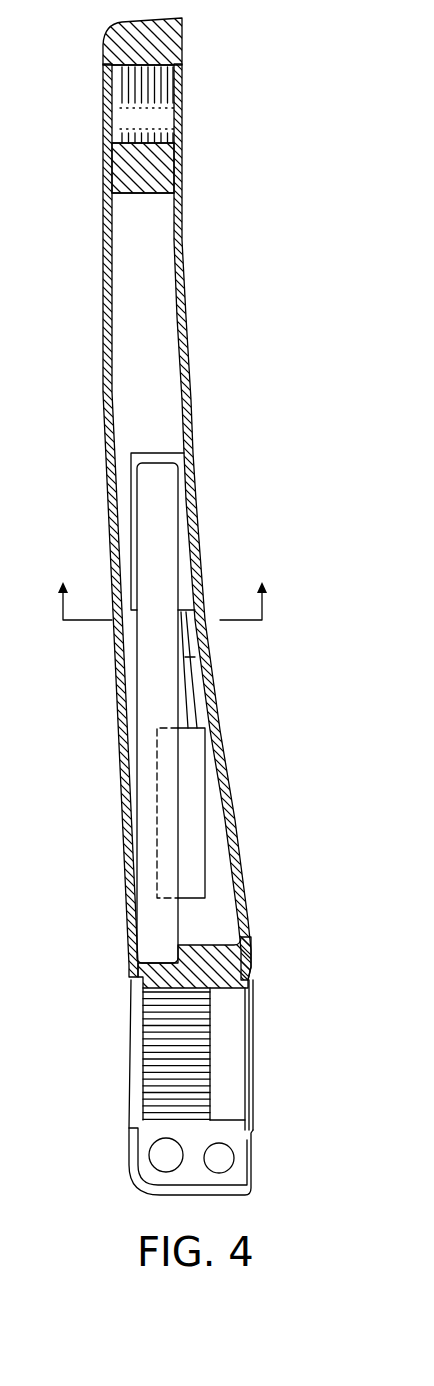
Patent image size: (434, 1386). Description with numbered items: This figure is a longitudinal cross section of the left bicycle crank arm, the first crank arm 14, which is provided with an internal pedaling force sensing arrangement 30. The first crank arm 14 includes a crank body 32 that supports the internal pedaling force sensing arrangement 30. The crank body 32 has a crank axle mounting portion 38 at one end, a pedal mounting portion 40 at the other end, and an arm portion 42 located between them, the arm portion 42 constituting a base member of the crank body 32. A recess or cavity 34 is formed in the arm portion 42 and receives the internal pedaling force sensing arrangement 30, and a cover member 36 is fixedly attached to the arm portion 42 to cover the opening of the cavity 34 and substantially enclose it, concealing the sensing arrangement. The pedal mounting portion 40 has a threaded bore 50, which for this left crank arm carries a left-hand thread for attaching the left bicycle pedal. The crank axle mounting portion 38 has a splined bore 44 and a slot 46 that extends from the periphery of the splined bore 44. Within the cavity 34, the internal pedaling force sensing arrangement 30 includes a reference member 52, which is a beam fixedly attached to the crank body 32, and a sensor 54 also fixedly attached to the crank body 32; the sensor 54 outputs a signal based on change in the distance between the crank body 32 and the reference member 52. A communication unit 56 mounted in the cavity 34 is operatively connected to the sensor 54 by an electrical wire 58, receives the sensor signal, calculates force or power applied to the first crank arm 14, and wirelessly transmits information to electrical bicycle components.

The first crank arm 14 is at (55, 101).
The internal pedaling force sensing arrangement 30 is at (189, 657).
The crank body 32 is at (143, 499).
The cavity 34 is at (132, 193).
The cover member 36 is at (103, 298).
The crank axle mounting portion 38 is at (252, 956).
The pedal mounting portion 40 is at (147, 170).
The arm portion 42 is at (191, 361).
The splined bore 44 is at (167, 1050).
The slot 46 is at (160, 1130).
The threaded bore 50 is at (157, 130).
The reference member 52 is at (158, 493).
The sensor 54 is at (152, 453).
The communication unit 56 is at (190, 824).
The electrical wire 58 is at (193, 692).